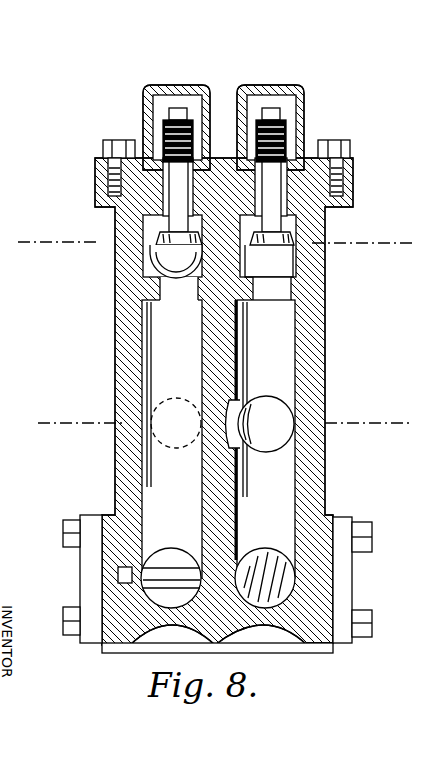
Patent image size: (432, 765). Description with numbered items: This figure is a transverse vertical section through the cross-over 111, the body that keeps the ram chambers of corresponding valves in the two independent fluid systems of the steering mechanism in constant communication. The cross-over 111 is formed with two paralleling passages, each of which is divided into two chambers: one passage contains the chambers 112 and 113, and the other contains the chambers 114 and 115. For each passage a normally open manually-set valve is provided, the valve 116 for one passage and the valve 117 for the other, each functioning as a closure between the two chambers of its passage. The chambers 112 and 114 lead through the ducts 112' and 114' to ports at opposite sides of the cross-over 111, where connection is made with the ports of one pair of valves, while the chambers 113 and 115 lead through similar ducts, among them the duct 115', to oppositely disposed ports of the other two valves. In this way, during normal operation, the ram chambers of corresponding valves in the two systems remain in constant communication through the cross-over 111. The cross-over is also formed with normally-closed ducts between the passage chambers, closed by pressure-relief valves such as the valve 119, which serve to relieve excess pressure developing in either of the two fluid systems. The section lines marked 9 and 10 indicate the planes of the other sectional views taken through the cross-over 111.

The section line 9- 9 is at (224, 436).
The section line 10- 10 is at (215, 256).
The cross-over 111 is at (331, 338).
The chamber 112 is at (299, 439).
The duct 112' is at (260, 441).
The chamber 113 is at (293, 268).
The chamber 114 is at (142, 439).
The duct 114' is at (176, 442).
The chamber 115 is at (141, 262).
The duct 115' is at (141, 246).
The manually-set valve 116 is at (266, 250).
The manually-set valve 117 is at (132, 236).
The pressure-relief valve 119 is at (250, 553).